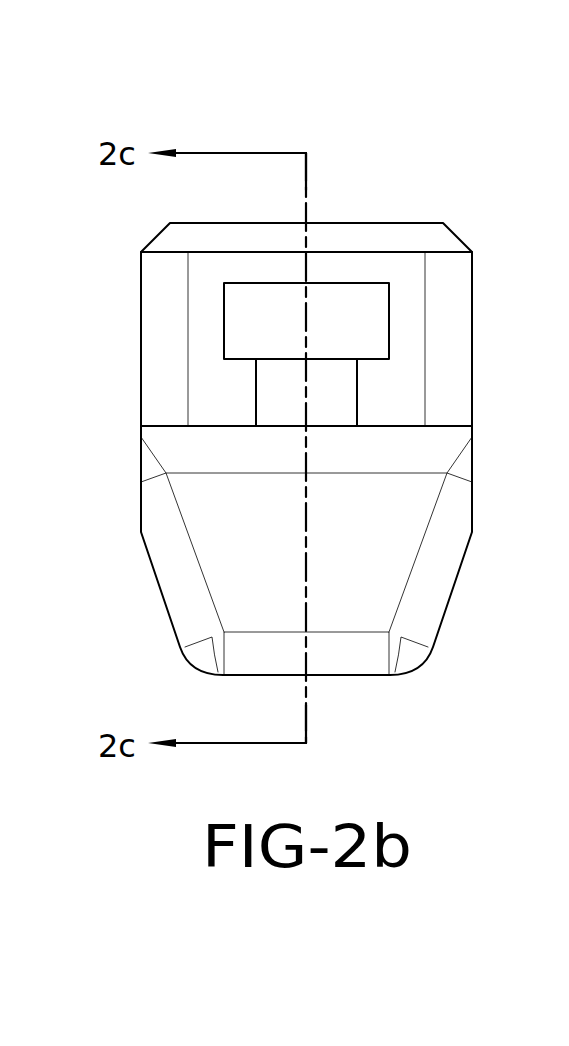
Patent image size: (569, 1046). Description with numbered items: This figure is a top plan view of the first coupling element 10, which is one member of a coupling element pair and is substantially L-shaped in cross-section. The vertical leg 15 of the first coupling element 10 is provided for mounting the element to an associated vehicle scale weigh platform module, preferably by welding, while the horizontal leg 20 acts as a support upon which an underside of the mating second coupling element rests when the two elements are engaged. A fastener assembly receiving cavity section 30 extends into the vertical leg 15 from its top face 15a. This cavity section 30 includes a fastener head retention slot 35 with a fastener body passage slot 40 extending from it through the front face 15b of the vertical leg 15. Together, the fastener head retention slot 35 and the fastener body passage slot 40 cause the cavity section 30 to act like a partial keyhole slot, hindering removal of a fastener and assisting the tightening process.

The first coupling element 10 is at (476, 147).
The vertical leg 15 is at (472, 323).
The top face 15a is at (208, 408).
The front face 15b is at (397, 426).
The horizontal leg 20 is at (472, 512).
The fastener assembly receiving cavity section 30 is at (206, 334).
The fastener head retention slot 35 is at (367, 288).
The fastener body passage slot 40 is at (354, 412).